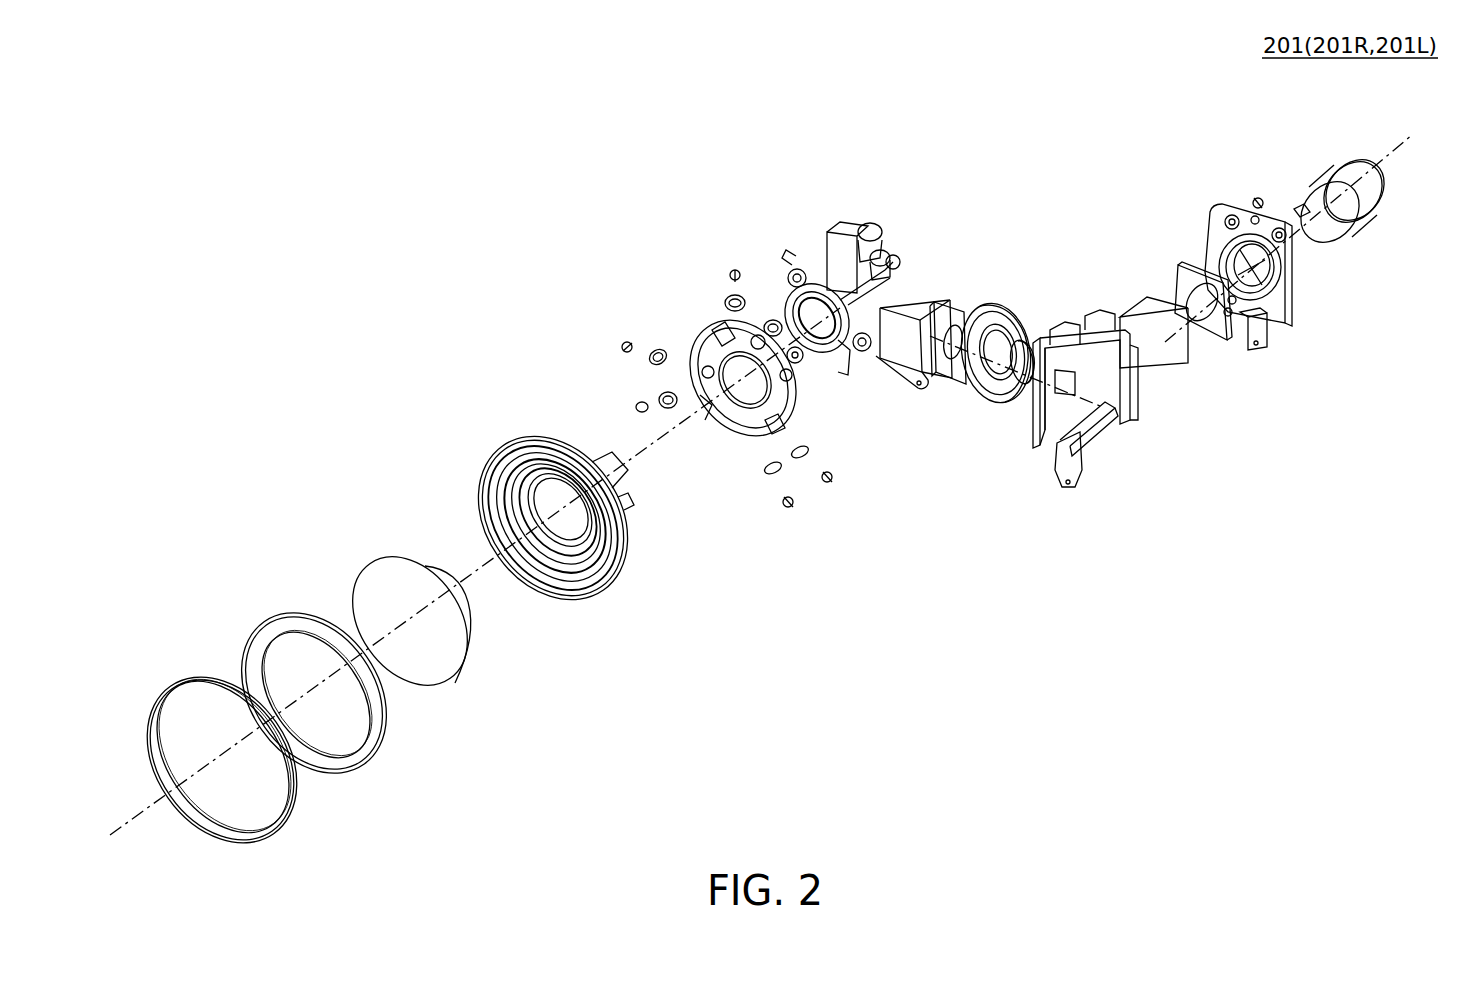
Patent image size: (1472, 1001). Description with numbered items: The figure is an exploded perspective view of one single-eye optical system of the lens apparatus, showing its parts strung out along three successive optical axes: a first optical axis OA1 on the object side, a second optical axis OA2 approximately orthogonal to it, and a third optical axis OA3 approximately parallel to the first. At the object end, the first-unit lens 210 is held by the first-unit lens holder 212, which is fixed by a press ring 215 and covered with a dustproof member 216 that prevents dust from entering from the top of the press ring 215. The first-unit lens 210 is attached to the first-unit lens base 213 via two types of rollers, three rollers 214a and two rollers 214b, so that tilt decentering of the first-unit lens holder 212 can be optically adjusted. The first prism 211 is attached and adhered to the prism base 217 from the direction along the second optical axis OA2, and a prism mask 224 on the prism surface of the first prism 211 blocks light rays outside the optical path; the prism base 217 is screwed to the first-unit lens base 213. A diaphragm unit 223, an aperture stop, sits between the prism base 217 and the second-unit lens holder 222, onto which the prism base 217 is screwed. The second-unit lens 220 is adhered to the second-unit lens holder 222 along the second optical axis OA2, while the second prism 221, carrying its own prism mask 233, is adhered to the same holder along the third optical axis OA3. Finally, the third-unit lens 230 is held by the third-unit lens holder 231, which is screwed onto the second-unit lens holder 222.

The first-unit lens 210 is at (363, 568).
The first prism 211 is at (925, 300).
The first-unit lens holder 212 is at (493, 452).
The first-unit lens base 213 is at (722, 322).
The roller 214a is at (653, 351).
The roller 214b is at (660, 399).
The press ring 215 is at (257, 630).
The dustproof member 216 is at (170, 685).
The prism base 217 is at (825, 245).
The second-unit lens 220 is at (1010, 412).
The second prism 221 is at (1143, 300).
The second-unit lens holder 222 is at (1098, 443).
The diaphragm unit 223 is at (1010, 308).
The prism mask 224 is at (951, 380).
The third-unit lens 230 is at (1323, 184).
The third-unit lens holder 231 is at (1290, 318).
The prism mask 233 is at (1225, 343).
The first optical axis OA1 is at (136, 815).
The second optical axis OA2 is at (980, 393).
The third optical axis OA3 is at (1397, 152).